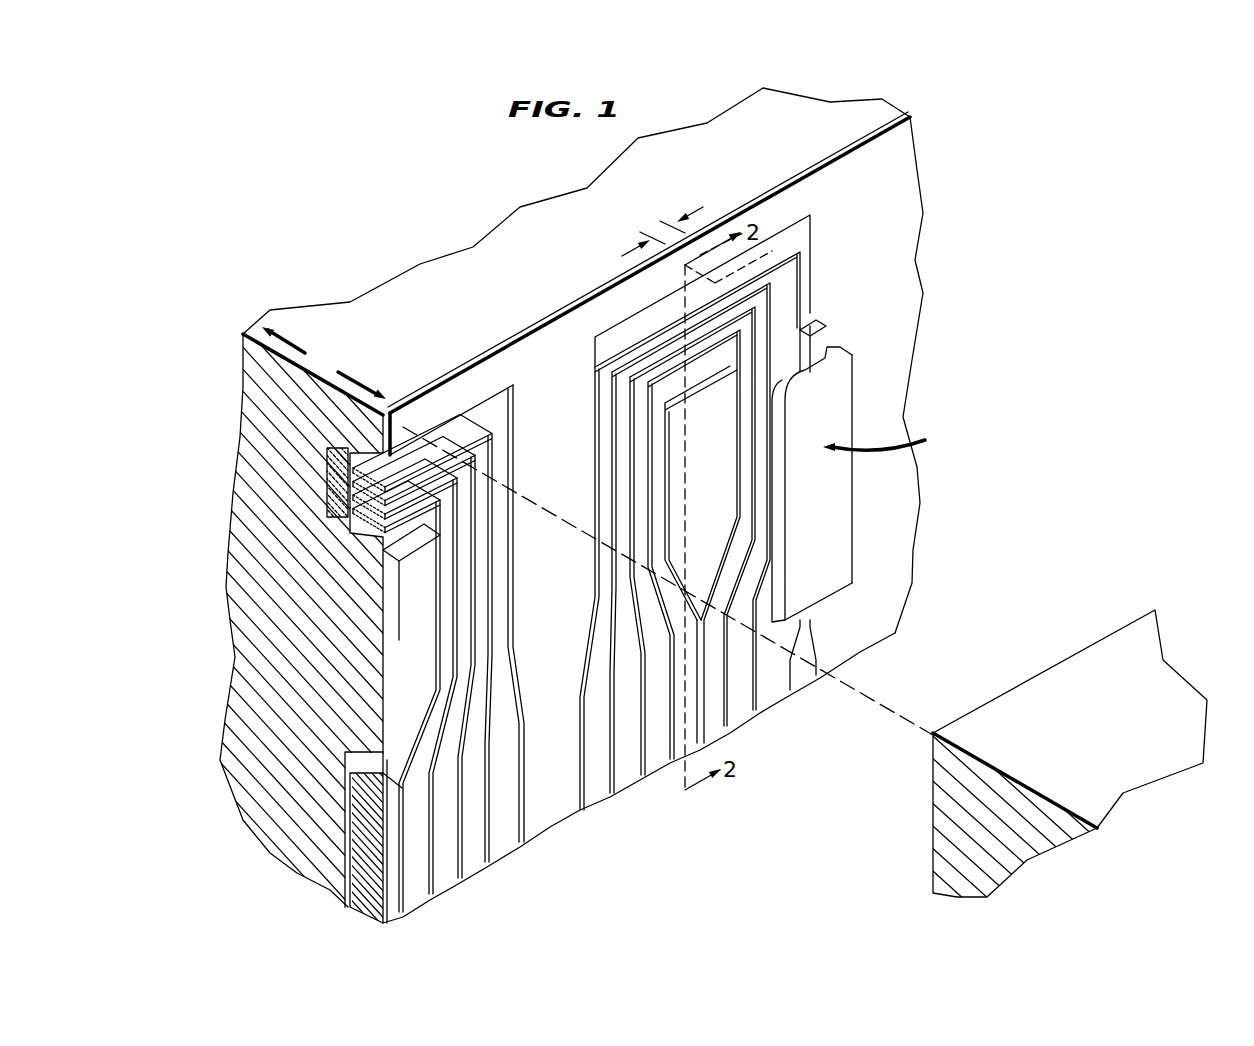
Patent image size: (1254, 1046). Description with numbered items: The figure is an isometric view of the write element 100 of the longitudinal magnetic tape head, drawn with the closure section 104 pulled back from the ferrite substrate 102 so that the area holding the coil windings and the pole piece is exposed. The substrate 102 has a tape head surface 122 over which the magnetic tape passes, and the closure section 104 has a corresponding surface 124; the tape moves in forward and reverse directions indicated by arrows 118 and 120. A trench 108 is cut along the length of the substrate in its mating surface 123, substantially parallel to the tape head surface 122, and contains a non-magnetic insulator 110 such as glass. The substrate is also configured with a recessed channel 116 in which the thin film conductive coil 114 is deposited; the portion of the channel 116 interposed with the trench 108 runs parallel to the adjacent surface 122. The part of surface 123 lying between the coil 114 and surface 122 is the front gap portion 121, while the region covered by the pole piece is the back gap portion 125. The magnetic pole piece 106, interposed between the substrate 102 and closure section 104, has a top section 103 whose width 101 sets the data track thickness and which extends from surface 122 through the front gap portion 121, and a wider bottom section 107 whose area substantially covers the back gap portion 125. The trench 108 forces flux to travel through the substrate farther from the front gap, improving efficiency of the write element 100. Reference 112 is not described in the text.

The write element 100 is at (672, 866).
The width of top section 101 is at (662, 238).
The ferrite substrate 102 is at (846, 117).
The top section 103 is at (833, 340).
The closure section 104 is at (933, 830).
The magnetic pole piece 106 is at (867, 484).
The bottom section 107 is at (853, 517).
The trench 108 is at (345, 445).
The non-magnetic insulator 110 is at (330, 483).
The conductor leads 112 is at (376, 386).
The thin film conductive coil 114 is at (800, 683).
The recessed channel 116 is at (353, 550).
The arrow 118 is at (358, 378).
The arrow 120 is at (296, 338).
The front gap portion 121 is at (612, 309).
The surface of ferrite substrate 122 is at (585, 258).
The surface of ferrite substrate 123 is at (895, 593).
The surface of closure section 124 is at (1102, 733).
The back gap portion 125 is at (727, 478).